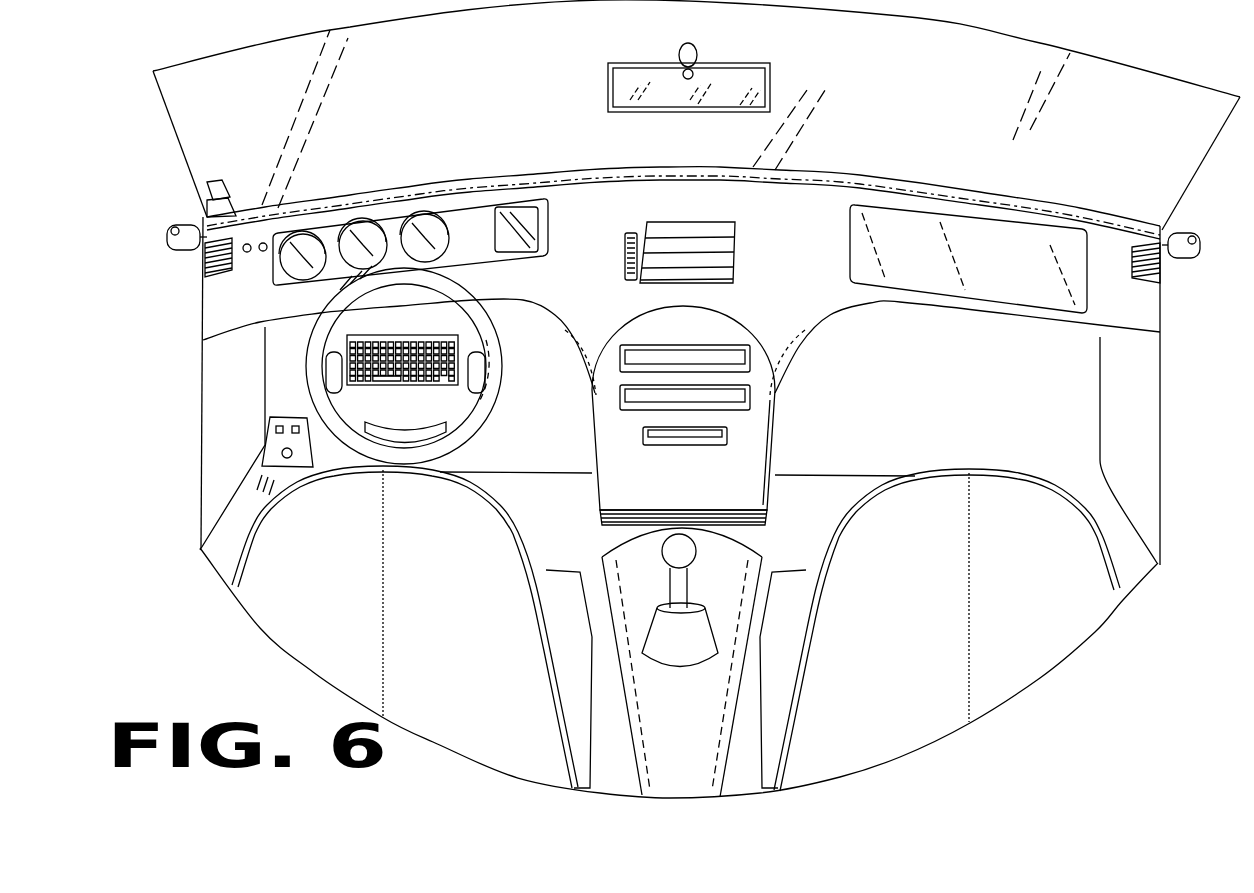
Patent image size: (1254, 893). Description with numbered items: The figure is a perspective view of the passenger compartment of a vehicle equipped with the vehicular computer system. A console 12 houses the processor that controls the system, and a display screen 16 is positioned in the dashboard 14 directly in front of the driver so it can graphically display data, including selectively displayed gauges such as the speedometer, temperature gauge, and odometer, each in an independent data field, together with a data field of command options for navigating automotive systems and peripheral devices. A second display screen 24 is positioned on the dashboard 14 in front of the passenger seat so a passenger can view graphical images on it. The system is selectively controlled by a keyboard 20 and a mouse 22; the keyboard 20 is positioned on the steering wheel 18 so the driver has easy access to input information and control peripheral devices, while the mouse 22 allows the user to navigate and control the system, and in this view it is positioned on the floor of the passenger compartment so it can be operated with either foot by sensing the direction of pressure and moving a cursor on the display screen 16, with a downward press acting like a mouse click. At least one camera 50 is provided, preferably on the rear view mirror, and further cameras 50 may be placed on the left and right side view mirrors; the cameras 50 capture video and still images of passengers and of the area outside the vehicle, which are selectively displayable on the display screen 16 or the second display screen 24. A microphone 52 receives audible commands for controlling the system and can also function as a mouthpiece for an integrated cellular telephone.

The console 12 is at (773, 417).
The dashboard 14 is at (1160, 332).
The display screen 16 is at (470, 200).
The steering wheel 18 is at (325, 309).
The keyboard 20 is at (353, 365).
The mouse 22 is at (267, 427).
The second display screen 24 is at (1088, 253).
The camera 50 is at (172, 228).
The microphone 52 is at (262, 244).